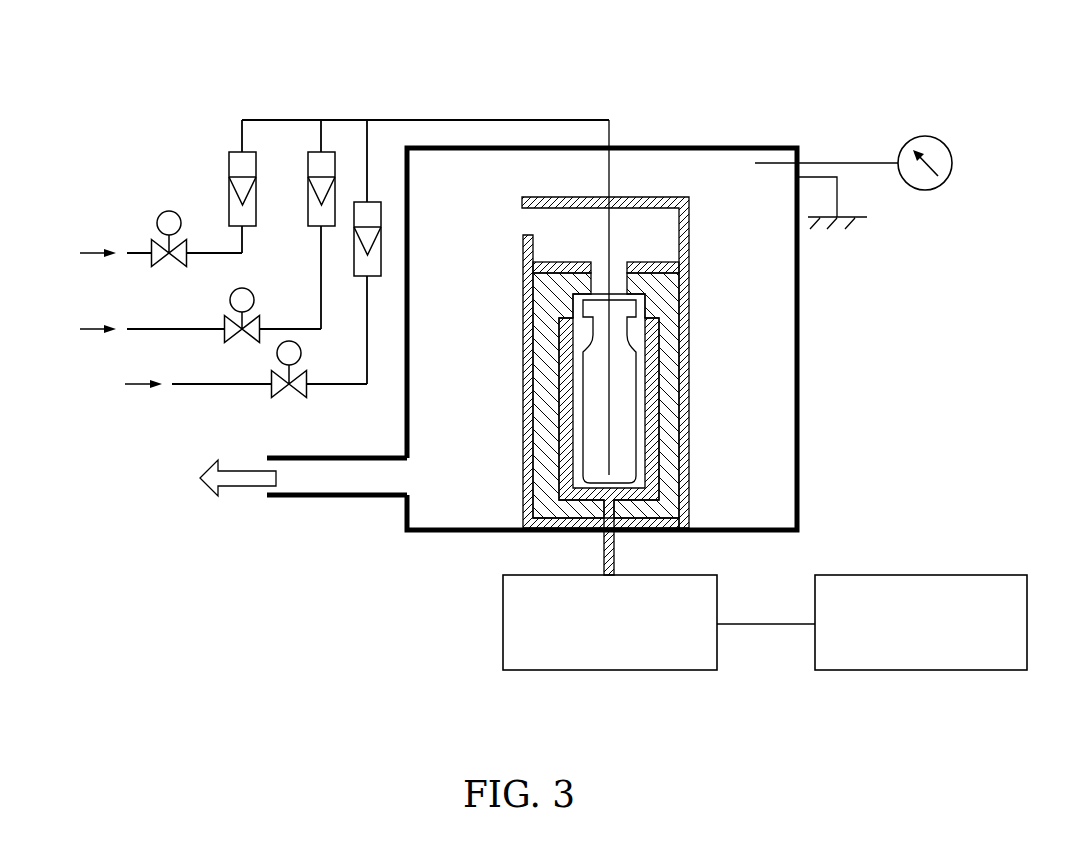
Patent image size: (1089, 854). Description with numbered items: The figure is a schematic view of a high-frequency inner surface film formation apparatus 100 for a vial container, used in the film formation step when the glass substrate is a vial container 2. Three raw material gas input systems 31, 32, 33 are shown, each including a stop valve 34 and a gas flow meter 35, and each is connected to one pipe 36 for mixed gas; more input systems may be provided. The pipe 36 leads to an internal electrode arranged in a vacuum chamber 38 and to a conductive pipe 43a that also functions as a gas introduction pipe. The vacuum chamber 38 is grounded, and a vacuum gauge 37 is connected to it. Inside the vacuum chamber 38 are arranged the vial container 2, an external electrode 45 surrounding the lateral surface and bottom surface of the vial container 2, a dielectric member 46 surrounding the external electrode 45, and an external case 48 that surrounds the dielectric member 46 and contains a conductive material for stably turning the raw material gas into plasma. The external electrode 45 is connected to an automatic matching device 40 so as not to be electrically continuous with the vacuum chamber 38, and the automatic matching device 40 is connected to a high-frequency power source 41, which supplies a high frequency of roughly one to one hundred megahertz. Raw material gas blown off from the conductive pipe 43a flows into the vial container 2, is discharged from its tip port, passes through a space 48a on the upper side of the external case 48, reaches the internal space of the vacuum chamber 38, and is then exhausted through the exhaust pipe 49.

The high-frequency inner surface film formation apparatus 100 is at (888, 79).
The vial container 2 is at (634, 343).
The raw material gas input system 31 is at (137, 250).
The raw material gas input system 32 is at (152, 328).
The raw material gas input system 33 is at (200, 383).
The stop valve 34 is at (169, 211).
The gas flow meter 35 is at (228, 152).
The pipe for mixed gas 36 is at (493, 118).
The vacuum gauge 37 is at (950, 140).
The vacuum chamber 38 is at (718, 145).
The automatic matching device 40 is at (690, 672).
The high-frequency power source 41 is at (985, 575).
The conductive pipe 43a is at (610, 238).
The external electrode 45 is at (523, 447).
The dielectric member 46 is at (690, 480).
The external case 48 is at (522, 340).
The space 48a is at (593, 236).
The exhaust pipe 49 is at (296, 497).